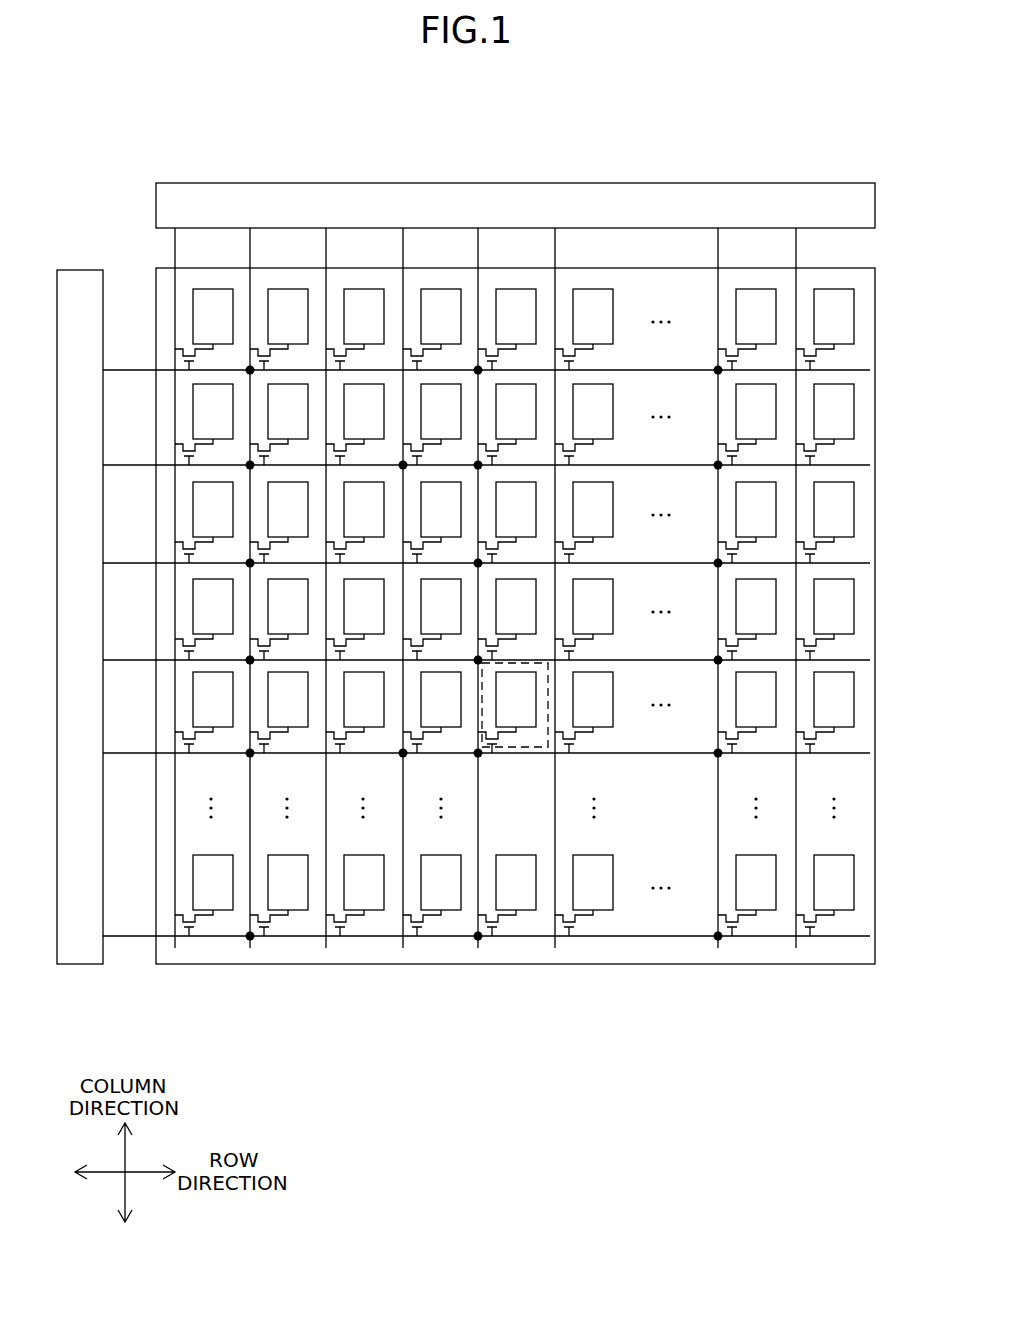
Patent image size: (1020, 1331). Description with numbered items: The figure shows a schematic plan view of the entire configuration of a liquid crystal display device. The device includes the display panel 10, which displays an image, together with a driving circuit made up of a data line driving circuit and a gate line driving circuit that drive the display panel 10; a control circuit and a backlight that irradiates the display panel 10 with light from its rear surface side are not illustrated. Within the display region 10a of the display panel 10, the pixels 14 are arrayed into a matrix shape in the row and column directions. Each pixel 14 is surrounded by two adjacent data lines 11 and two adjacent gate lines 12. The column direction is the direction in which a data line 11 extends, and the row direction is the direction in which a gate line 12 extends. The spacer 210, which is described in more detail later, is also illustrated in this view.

The display panel 10 is at (743, 106).
The display region 10a is at (280, 965).
The data line 11 is at (556, 255).
The gate line 12 is at (125, 755).
The pixel 14 is at (533, 760).
The spacer 210 is at (492, 763).